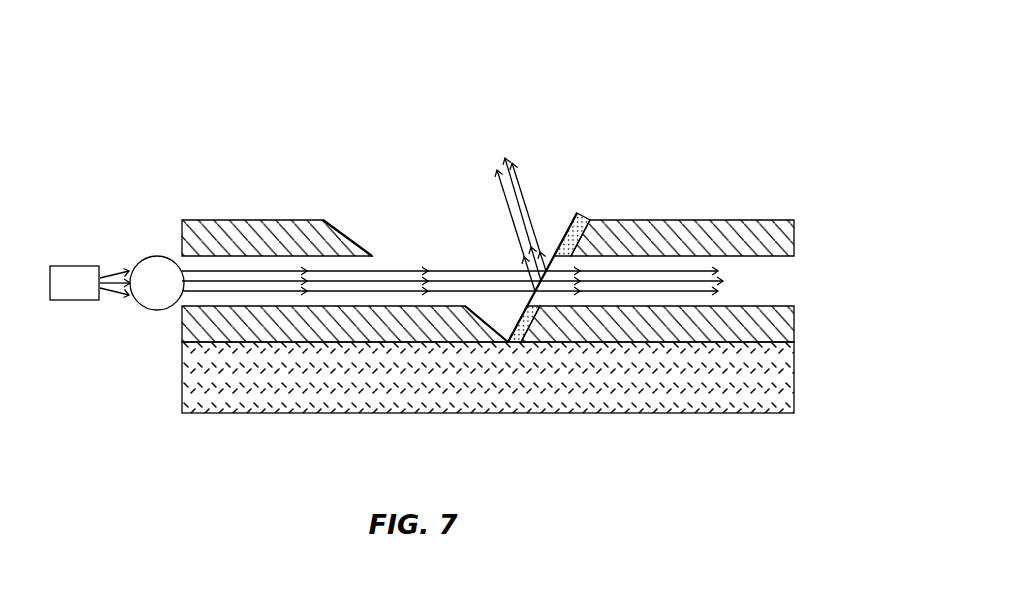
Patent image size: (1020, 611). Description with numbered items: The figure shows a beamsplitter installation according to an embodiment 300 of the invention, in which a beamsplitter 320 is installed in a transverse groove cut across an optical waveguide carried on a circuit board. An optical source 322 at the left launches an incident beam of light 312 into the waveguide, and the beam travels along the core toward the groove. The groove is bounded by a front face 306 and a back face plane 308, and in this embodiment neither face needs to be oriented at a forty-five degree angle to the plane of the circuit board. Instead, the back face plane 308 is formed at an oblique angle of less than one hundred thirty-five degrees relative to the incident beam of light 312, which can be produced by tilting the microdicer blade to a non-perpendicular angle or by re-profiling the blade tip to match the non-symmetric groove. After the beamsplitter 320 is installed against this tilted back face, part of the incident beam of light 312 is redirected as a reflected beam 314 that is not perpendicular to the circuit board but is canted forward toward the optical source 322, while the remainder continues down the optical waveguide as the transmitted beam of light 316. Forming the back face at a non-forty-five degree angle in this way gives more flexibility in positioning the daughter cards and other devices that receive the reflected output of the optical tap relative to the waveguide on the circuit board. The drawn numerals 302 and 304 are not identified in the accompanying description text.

The embodiment 300 is at (114, 138).
The substrate 302 is at (222, 413).
The upper cladding layer 304 is at (240, 220).
The front face 306 is at (362, 247).
The back face plane 308 is at (578, 238).
The incident beam of light 312 is at (367, 291).
The reflected beam 314 is at (518, 177).
The transmitted beam of light 316 is at (632, 293).
The beamsplitter 320 is at (583, 212).
The optical source 322 is at (78, 300).